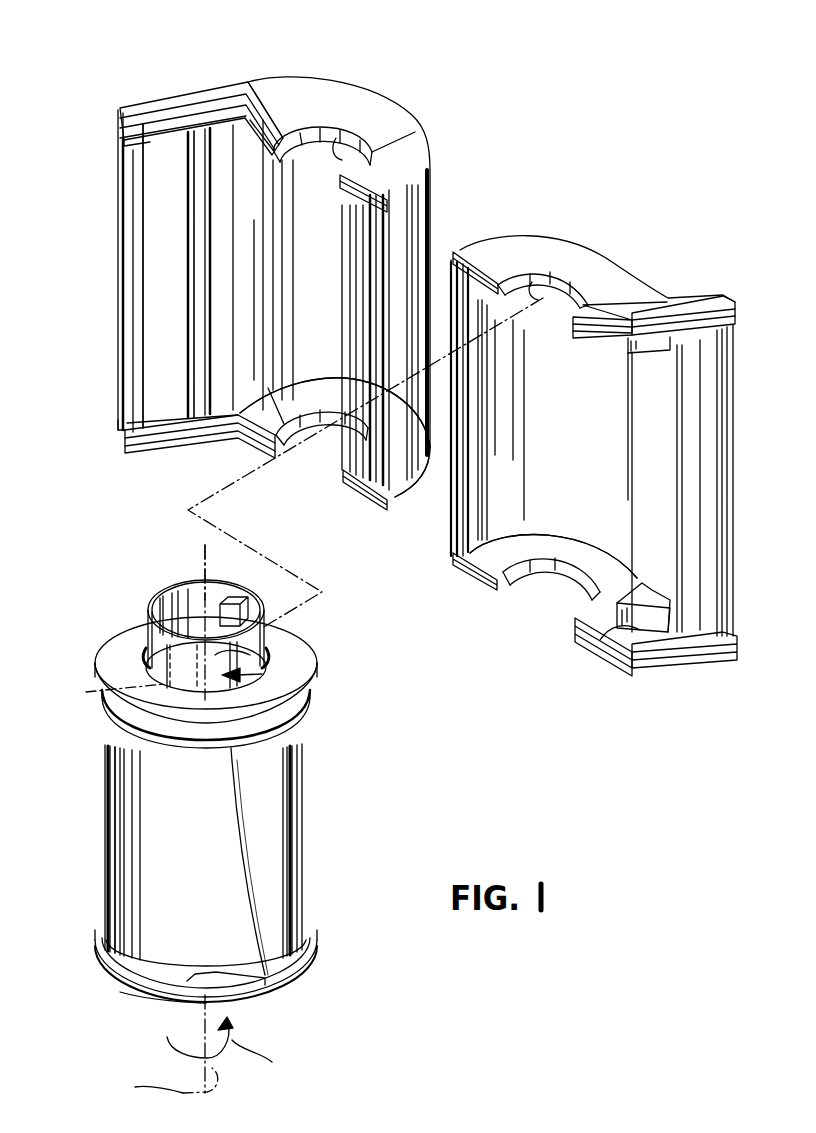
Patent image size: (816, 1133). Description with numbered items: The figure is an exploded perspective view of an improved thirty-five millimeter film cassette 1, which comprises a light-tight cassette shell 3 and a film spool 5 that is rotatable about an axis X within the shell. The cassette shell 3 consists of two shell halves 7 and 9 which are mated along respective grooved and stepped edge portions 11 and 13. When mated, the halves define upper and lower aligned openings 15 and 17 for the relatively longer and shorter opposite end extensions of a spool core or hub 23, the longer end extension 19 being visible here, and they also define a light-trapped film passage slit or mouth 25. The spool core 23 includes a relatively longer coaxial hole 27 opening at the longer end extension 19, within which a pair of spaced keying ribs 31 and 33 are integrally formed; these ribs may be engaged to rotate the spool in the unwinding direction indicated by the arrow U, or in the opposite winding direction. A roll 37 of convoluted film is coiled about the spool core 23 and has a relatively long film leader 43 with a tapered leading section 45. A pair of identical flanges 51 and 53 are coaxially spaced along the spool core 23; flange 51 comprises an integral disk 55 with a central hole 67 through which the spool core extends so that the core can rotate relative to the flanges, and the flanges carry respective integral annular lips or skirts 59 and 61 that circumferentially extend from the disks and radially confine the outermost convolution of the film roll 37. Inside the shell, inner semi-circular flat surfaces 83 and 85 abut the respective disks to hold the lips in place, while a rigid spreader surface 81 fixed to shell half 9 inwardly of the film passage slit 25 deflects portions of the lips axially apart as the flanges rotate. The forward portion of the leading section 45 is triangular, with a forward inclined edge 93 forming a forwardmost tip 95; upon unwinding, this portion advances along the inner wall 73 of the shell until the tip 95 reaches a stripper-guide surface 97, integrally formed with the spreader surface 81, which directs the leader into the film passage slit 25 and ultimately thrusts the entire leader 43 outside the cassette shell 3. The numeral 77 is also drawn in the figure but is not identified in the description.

The film cassette 1 is at (222, 73).
The cassette shell 3 is at (516, 232).
The film spool 5 is at (312, 819).
The shell half 7 is at (368, 88).
The shell half 9 is at (604, 243).
The grooved and stepped edge portion 11 is at (128, 142).
The grooved and stepped edge portion 13 is at (452, 265).
The upper aligned opening 15 is at (320, 150).
The lower aligned opening 17 is at (568, 297).
The longer end extension 19 is at (142, 608).
The spool core 23 is at (270, 672).
The film passage slit 25 is at (150, 300).
The longer coaxial hole 27 is at (190, 585).
The keying rib 31 is at (232, 603).
The keying rib 33 is at (86, 692).
The film roll 37 is at (126, 798).
The film leader 43 is at (113, 839).
The leading section 45 is at (224, 873).
The flange 51 is at (312, 702).
The flange 53 is at (113, 970).
The disk 55 is at (122, 666).
The annular lip 59 is at (284, 718).
The annular lip 61 is at (148, 992).
The central hole 67 is at (150, 652).
The inner wall 73 is at (306, 286).
The end plate lip 77 is at (106, 703).
The spreader surface 81 is at (657, 628).
The inner semi-circular flat surface 83 is at (340, 157).
The inner semi-circular flat surface 85 is at (310, 395).
The forward inclined edge 93 is at (238, 826).
The forwardmost tip 95 is at (278, 976).
The stripper-guide surface 97 is at (637, 620).